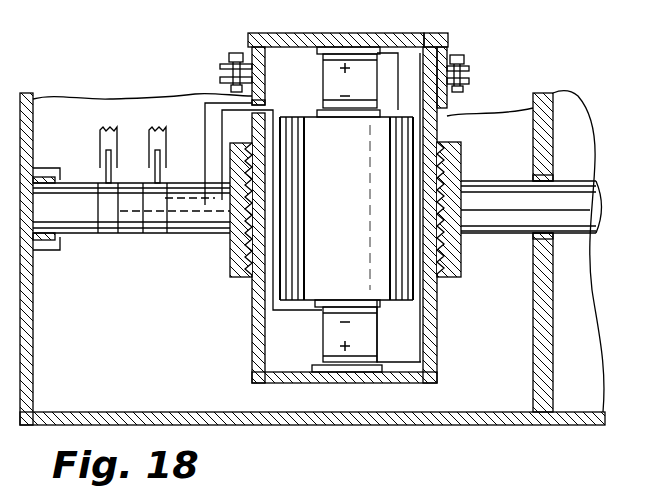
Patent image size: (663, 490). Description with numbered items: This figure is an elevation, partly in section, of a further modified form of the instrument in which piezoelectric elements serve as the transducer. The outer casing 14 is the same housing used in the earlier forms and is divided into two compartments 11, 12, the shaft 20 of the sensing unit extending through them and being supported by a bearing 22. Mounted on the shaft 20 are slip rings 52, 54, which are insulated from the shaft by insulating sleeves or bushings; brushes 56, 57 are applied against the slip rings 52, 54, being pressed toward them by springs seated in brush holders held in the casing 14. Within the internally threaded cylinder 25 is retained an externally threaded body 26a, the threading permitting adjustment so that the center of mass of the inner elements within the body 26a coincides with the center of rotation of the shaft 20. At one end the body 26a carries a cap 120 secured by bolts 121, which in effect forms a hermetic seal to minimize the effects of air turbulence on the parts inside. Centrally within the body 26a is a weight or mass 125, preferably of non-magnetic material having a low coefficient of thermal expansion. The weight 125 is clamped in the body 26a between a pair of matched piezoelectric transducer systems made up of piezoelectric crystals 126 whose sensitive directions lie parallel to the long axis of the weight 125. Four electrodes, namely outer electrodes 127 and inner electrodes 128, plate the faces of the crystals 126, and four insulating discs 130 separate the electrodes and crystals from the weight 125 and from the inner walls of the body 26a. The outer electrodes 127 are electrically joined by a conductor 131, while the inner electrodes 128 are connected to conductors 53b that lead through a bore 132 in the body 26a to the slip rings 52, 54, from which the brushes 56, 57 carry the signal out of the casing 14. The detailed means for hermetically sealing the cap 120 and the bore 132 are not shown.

The compartment 11 is at (512, 387).
The compartment 12 is at (588, 349).
The outer casing 14 is at (448, 414).
The shaft 20 is at (192, 228).
The bearing 22 is at (48, 244).
The internally threaded cylinder 25 is at (232, 268).
The externally threaded body 26a is at (436, 358).
The slip ring 52 is at (110, 226).
The slip ring 54 is at (157, 228).
The conductor 53b is at (213, 125).
The brush 56 is at (100, 160).
The brush 57 is at (164, 160).
The cap 120 is at (296, 33).
The bolt 121 is at (229, 54).
The weight or mass 125 is at (342, 224).
The piezoelectric crystal 126 is at (372, 87).
The outer electrode 127 is at (323, 59).
The inner electrode 128 is at (373, 104).
The insulating disc 130 is at (370, 47).
The conductor 131 is at (424, 40).
The bore 132 is at (264, 102).